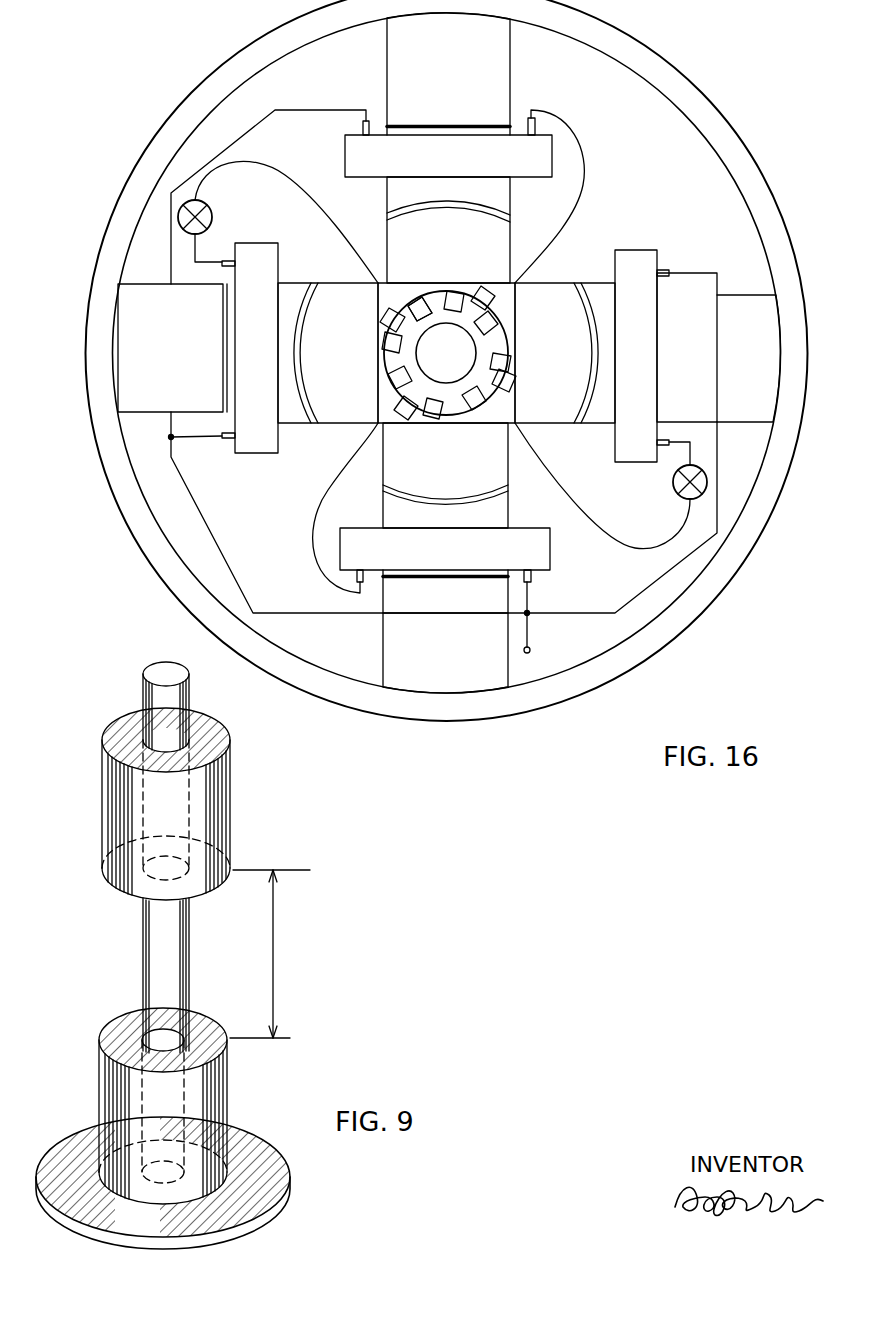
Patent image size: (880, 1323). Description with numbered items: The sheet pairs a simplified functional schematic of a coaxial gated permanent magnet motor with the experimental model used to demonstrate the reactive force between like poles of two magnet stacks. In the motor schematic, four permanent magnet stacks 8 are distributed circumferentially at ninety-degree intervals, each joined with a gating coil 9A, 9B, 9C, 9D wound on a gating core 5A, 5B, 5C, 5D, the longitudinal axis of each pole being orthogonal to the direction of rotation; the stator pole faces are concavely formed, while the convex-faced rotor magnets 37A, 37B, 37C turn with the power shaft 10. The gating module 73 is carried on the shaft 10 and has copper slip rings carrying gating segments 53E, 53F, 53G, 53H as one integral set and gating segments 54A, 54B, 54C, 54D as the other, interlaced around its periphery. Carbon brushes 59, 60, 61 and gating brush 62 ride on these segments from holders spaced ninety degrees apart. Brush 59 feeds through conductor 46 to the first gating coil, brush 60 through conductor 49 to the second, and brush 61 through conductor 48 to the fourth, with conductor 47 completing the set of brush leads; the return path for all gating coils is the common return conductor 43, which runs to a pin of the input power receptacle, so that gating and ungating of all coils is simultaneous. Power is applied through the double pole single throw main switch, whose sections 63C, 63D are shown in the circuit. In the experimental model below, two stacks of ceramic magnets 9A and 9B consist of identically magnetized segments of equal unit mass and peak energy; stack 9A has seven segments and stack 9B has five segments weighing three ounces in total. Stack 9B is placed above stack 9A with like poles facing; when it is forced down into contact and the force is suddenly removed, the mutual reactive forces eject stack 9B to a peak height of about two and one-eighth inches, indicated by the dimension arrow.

In FIG. 16, the permanent magnet stack 8 is at (387, 37).
In FIG. 16, the ceramic magnet stack / gating coil 9A is at (277, 258).
In FIG. 9, the ceramic magnet stack / gating coil 9A is at (228, 1072).
In FIG. 16, the ceramic magnet stack / gating coil 9B is at (553, 147).
In FIG. 9, the ceramic magnet stack / gating coil 9B is at (190, 804).
In FIG. 16, the gating coil 9C is at (638, 250).
In FIG. 16, the gating coil 9D is at (550, 557).
In FIG. 16, the gating core 5A is at (270, 437).
In FIG. 16, the gating core 5B is at (385, 127).
In FIG. 16, the gating core 5C is at (667, 290).
In FIG. 16, the gating core 5D is at (508, 512).
In FIG. 16, the power shaft 10 is at (384, 357).
In FIG. 16, the rotor magnet 37A is at (327, 413).
In FIG. 16, the rotor magnet 37B is at (510, 233).
In FIG. 16, the rotor magnet 37C is at (558, 290).
In FIG. 16, the common return conductor 43 is at (531, 650).
In FIG. 16, the conductor 46 is at (638, 548).
In FIG. 16, the conductor 47 is at (258, 167).
In FIG. 16, the conductor 48 is at (317, 547).
In FIG. 16, the conductor 49 is at (533, 110).
In FIG. 16, the gating segment 53E is at (383, 338).
In FIG. 16, the gating segment 53F is at (428, 418).
In FIG. 16, the gating segment 53G is at (510, 375).
In FIG. 16, the gating segment 53H is at (457, 290).
In FIG. 16, the gating segment 54A is at (410, 297).
In FIG. 16, the gating segment 54B is at (393, 384).
In FIG. 16, the gating segment 54C is at (477, 409).
In FIG. 16, the gating segment 54D is at (500, 318).
In FIG. 16, the carbon brush 59 is at (386, 312).
In FIG. 16, the carbon brush 60 is at (490, 292).
In FIG. 16, the carbon brush 61 is at (512, 393).
In FIG. 16, the gating brush 62 is at (397, 417).
In FIG. 16, the main switch section 63C is at (222, 217).
In FIG. 16, the main switch section 63D is at (673, 493).
In FIG. 16, the gating module 73 is at (405, 306).